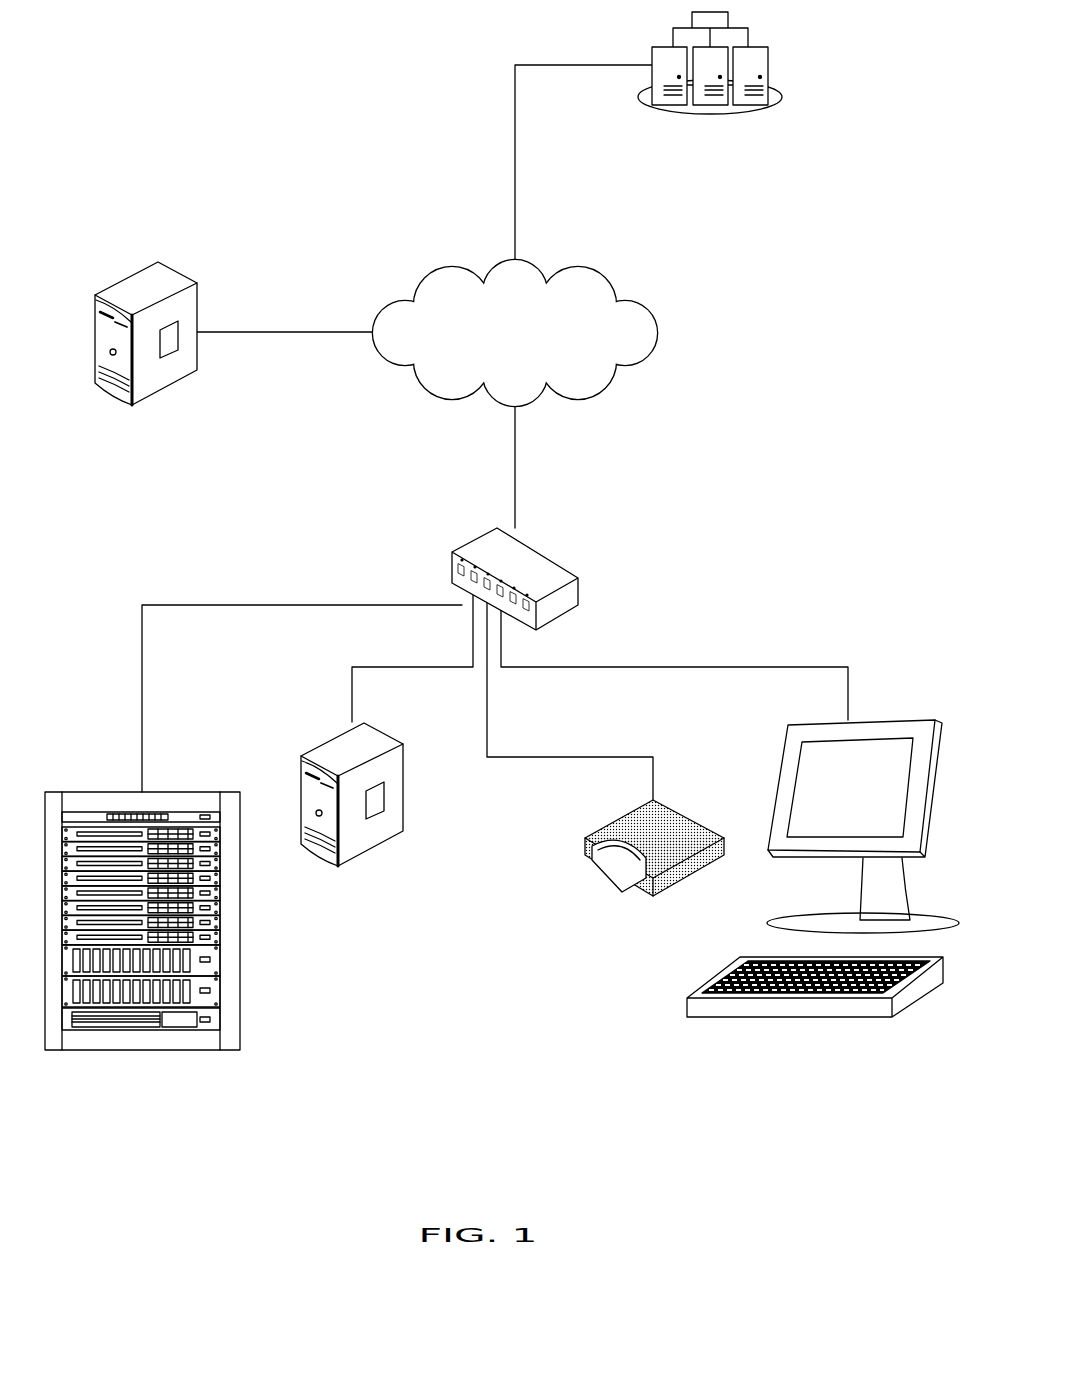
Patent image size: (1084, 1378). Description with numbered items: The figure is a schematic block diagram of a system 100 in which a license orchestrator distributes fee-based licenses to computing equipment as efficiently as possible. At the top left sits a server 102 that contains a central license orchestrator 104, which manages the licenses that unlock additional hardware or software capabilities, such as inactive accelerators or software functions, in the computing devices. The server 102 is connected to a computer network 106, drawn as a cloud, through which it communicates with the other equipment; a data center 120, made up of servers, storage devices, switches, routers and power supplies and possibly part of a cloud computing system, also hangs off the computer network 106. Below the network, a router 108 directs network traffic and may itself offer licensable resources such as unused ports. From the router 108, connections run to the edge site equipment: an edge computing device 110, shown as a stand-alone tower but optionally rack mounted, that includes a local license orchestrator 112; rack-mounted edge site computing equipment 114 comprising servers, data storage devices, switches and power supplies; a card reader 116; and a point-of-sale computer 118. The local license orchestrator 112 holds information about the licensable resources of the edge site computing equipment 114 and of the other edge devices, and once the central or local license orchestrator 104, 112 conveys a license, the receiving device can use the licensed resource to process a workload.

The system 100 is at (170, 73).
The server 102 is at (146, 362).
The central license orchestrator 104 is at (178, 335).
The computer network 106 is at (497, 365).
The router 108 is at (552, 579).
The edge computing device 110 is at (352, 838).
The local license orchestrator 112 is at (384, 796).
The edge site computing equipment 114 is at (142, 981).
The card reader 116 is at (654, 878).
The point-of-sale computer 118 is at (823, 899).
The data center 120 is at (710, 95).